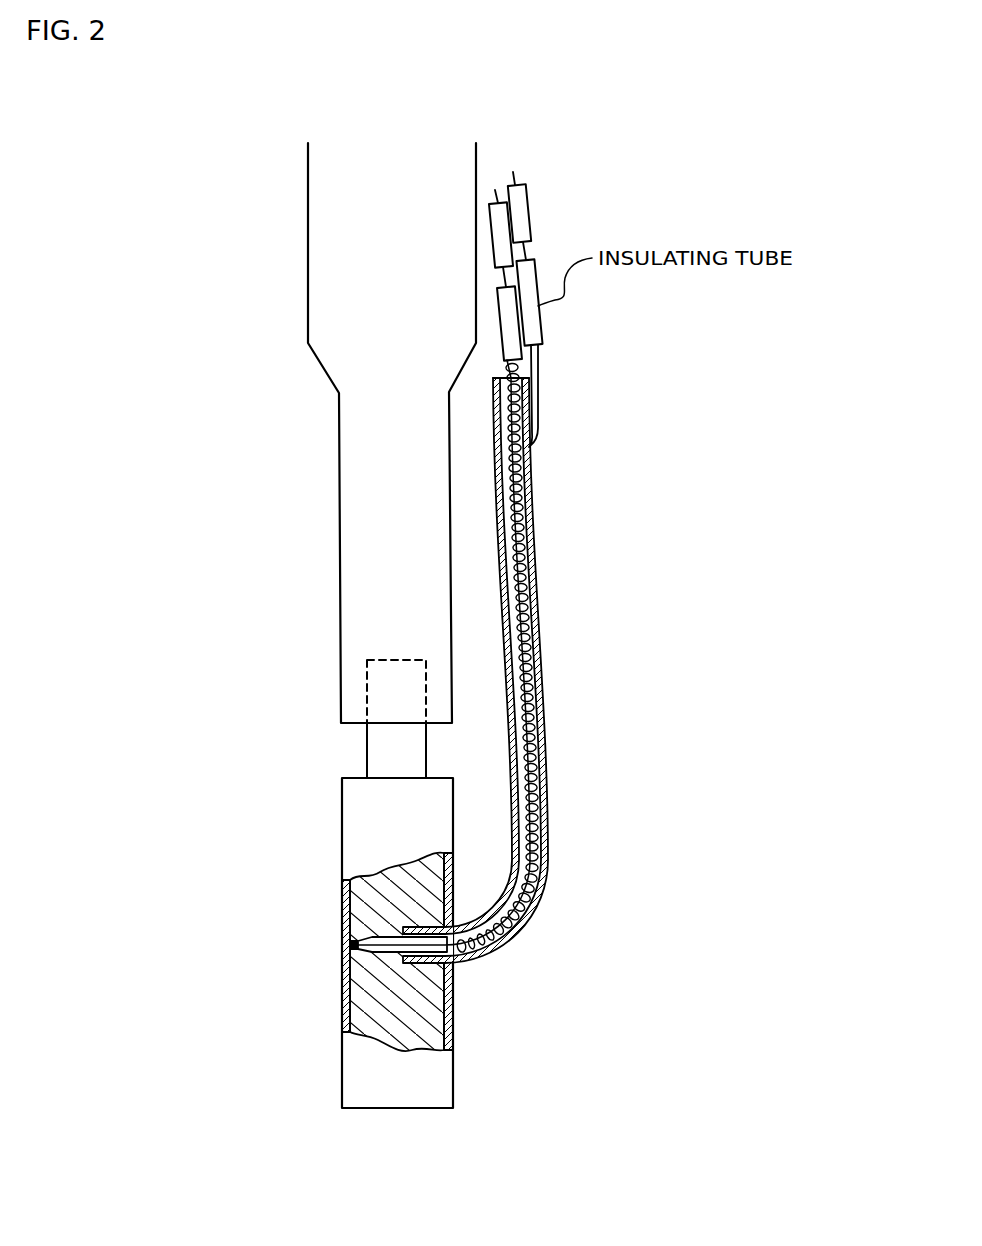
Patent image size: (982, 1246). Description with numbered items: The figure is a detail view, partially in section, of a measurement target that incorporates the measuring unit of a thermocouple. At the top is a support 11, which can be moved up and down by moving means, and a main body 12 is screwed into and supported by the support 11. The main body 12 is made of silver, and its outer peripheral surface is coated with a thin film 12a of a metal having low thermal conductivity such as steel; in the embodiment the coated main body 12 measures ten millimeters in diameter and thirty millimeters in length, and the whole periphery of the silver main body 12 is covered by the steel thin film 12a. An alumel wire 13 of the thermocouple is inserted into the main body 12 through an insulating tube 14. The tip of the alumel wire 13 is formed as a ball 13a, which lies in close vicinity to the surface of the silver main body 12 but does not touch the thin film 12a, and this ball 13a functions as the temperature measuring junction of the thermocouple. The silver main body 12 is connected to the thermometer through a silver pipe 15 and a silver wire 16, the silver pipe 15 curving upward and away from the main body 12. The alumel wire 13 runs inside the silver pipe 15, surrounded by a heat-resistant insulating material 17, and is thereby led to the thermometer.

The support 11 is at (385, 256).
The main body 12 is at (425, 1002).
The thin film 12a is at (448, 1031).
The alumel wire 13 is at (535, 690).
The ball 13a is at (350, 944).
The insulating tube 14 is at (390, 945).
The silver pipe 15 is at (530, 543).
The silver wire 16 is at (537, 395).
The heat-resistant insulating material 17 is at (527, 618).